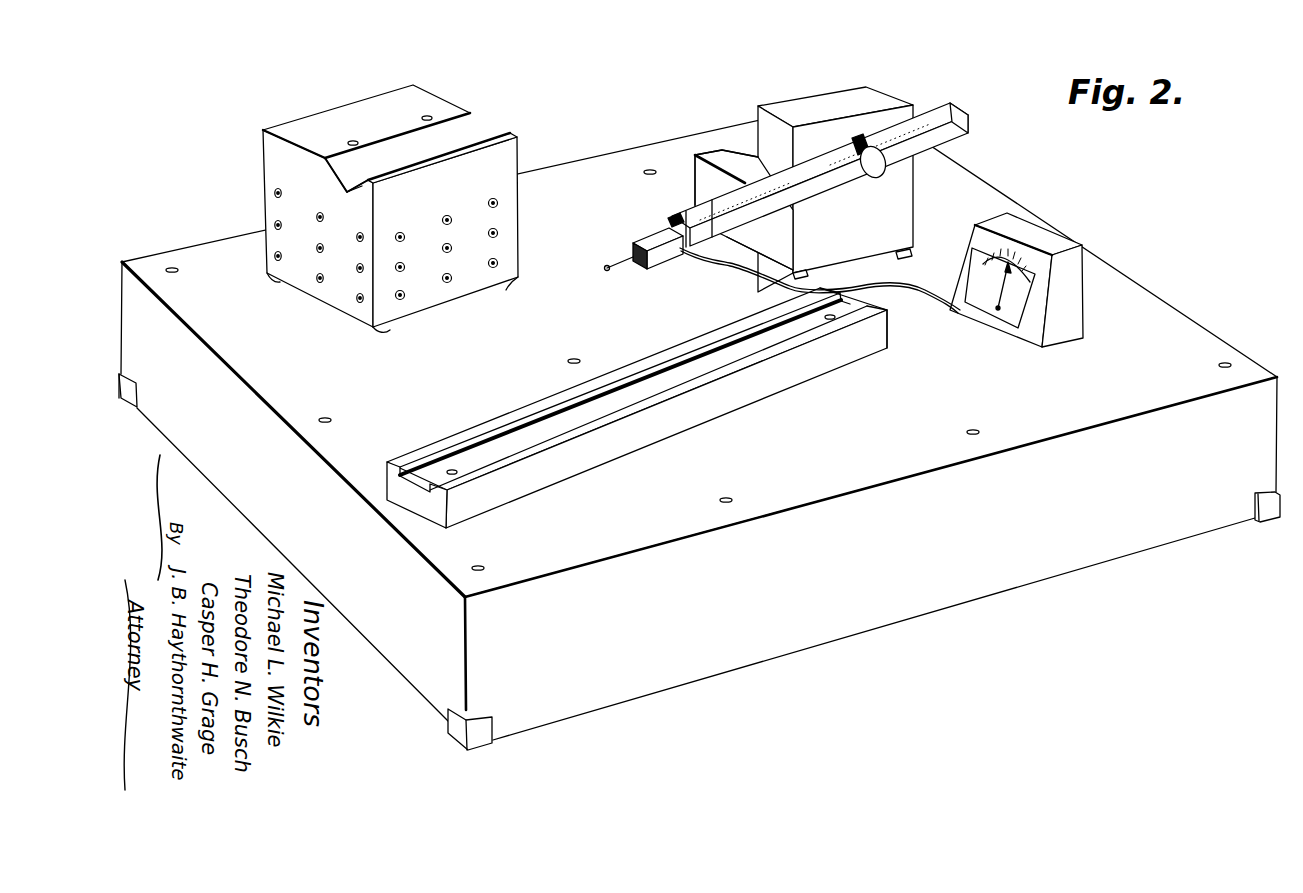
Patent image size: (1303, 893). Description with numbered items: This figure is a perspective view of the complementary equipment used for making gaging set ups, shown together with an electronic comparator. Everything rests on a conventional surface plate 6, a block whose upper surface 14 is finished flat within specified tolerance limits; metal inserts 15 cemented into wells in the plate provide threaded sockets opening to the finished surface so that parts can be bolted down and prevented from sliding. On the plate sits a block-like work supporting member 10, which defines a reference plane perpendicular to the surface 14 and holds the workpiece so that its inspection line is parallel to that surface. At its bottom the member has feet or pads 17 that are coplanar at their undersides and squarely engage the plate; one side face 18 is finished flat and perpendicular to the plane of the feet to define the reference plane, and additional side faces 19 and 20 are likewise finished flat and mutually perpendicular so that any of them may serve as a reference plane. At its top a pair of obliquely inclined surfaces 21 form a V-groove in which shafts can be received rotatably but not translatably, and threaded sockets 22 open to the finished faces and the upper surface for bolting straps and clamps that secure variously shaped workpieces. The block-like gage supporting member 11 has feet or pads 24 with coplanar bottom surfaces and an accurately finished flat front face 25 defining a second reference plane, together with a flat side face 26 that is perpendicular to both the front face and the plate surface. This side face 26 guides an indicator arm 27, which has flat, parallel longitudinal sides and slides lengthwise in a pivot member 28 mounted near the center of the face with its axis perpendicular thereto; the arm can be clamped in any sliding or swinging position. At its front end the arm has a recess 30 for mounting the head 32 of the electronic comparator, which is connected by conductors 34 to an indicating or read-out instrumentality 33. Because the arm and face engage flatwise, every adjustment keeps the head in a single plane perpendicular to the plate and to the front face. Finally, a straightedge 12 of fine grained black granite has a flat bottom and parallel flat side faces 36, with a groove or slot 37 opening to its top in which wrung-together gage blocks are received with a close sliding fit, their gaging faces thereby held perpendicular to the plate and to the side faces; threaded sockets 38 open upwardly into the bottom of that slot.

The surface plate 6 is at (699, 424).
The work supporting member 10 is at (390, 220).
The gage supporting member 11 is at (859, 178).
The straightedge 12 is at (637, 406).
The upper surface 14 is at (1147, 308).
The metal inserts 15 is at (172, 268).
The feet or pads 17 is at (270, 280).
The side face 18 is at (497, 161).
The side face 19 is at (270, 186).
The side face 20 is at (518, 203).
The obliquely inclined surfaces 21 is at (348, 165).
The threaded sockets 22 is at (424, 118).
The feet or pads 24 is at (896, 256).
The front face 25 is at (773, 125).
The side face 26 is at (902, 205).
The indicator arm 27 is at (712, 238).
The pivot member 28 is at (875, 177).
The recess 30 is at (662, 222).
The head 32 is at (665, 260).
The indicating or read-out instrumentality 33 is at (1035, 235).
The conductors 34 is at (908, 286).
The side faces 36 is at (648, 432).
The groove or slot 37 is at (542, 423).
The threaded sockets 38 is at (452, 470).